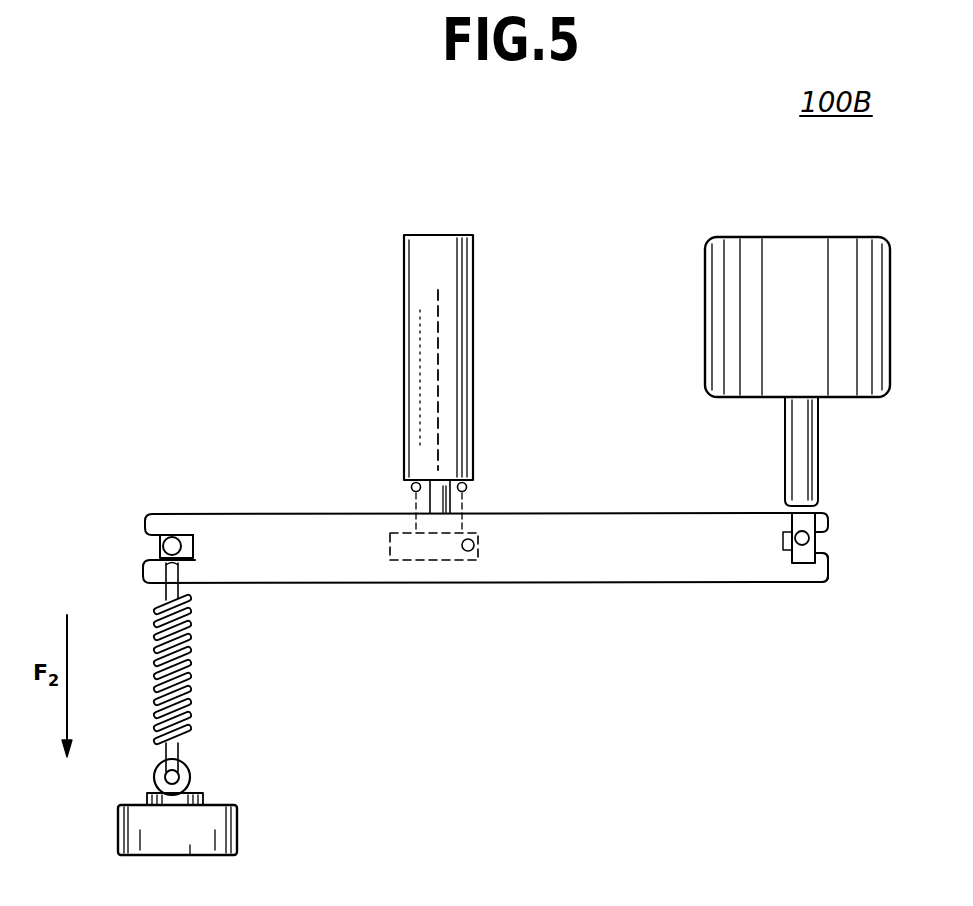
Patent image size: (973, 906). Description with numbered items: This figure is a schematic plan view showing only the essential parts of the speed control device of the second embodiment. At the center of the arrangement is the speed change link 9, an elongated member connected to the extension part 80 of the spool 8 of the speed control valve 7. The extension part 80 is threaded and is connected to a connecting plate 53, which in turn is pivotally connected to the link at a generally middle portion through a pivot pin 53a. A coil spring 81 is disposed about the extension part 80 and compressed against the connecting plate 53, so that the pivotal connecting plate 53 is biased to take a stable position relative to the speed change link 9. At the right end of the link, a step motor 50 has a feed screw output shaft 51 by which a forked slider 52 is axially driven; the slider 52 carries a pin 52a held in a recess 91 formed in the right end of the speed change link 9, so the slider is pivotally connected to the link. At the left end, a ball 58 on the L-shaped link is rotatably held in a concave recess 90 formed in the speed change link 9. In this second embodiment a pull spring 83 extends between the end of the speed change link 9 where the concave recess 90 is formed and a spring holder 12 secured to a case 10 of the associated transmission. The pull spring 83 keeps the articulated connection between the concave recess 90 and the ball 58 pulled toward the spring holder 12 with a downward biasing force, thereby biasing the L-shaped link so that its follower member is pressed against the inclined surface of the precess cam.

The speed control valve 7 is at (430, 226).
The spool 8 is at (438, 420).
The speed change link 9 is at (670, 565).
The case 10 is at (118, 830).
The spring holder 12 is at (193, 775).
The step motor 50 is at (750, 240).
The feed screw output shaft 51 is at (810, 452).
The forked slider 52 is at (808, 525).
The pin 52a is at (808, 565).
The connecting plate 53 is at (450, 560).
The pivot pin 53a is at (478, 548).
The ball 58 is at (172, 545).
The extension part 80 is at (467, 498).
The coil spring 81 is at (406, 488).
The pull spring 83 is at (190, 688).
The concave recess 90 is at (143, 525).
The recess 91 is at (830, 555).